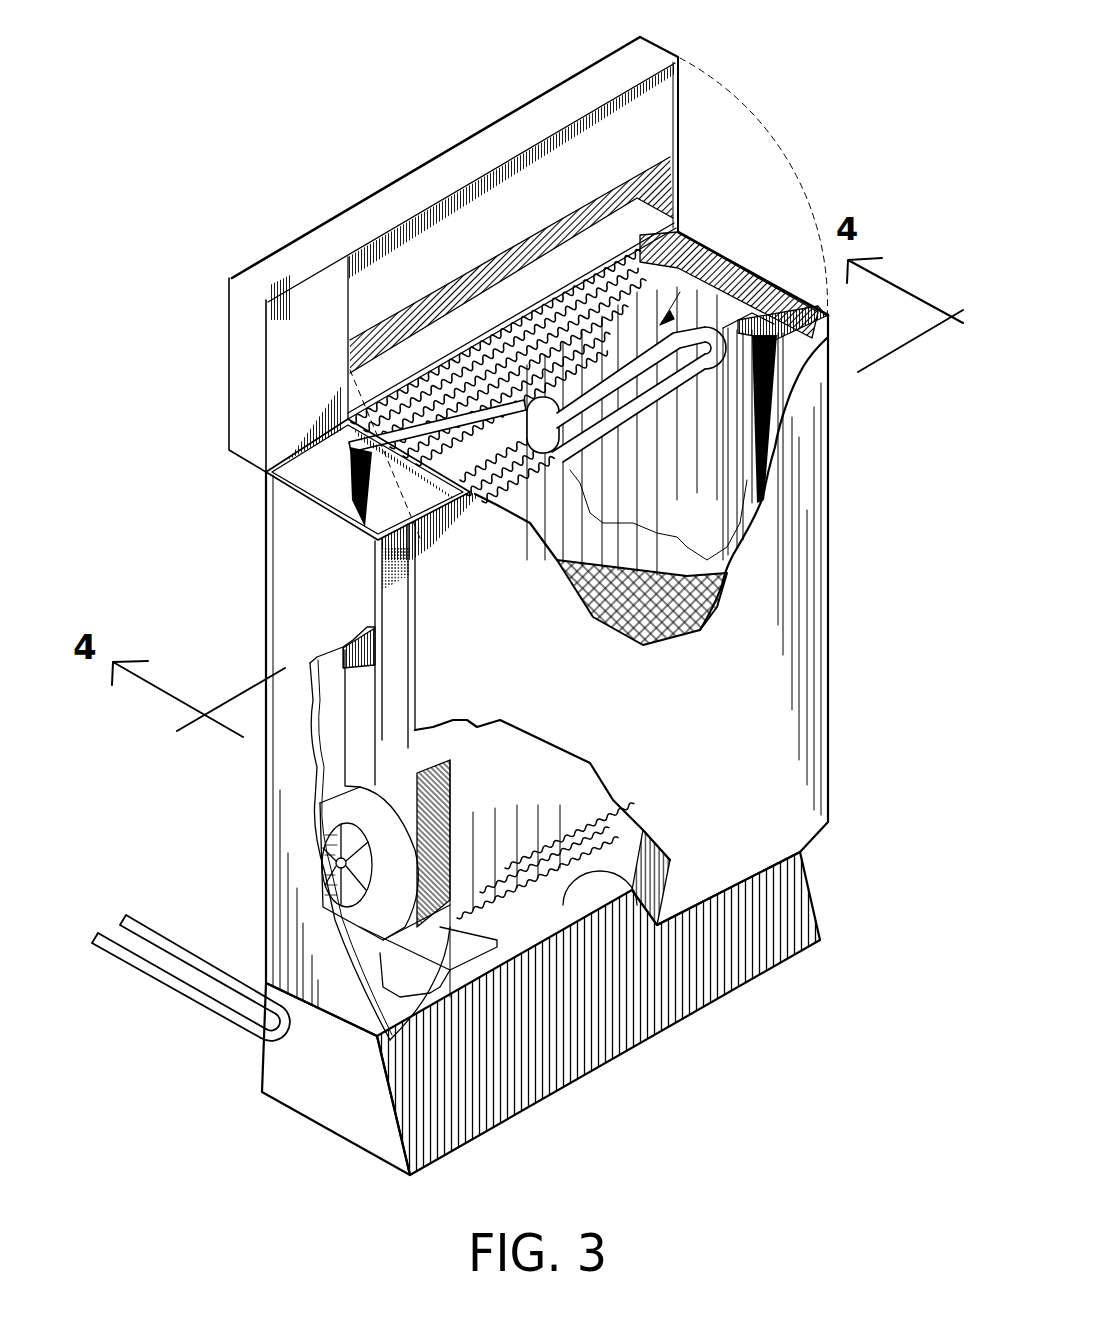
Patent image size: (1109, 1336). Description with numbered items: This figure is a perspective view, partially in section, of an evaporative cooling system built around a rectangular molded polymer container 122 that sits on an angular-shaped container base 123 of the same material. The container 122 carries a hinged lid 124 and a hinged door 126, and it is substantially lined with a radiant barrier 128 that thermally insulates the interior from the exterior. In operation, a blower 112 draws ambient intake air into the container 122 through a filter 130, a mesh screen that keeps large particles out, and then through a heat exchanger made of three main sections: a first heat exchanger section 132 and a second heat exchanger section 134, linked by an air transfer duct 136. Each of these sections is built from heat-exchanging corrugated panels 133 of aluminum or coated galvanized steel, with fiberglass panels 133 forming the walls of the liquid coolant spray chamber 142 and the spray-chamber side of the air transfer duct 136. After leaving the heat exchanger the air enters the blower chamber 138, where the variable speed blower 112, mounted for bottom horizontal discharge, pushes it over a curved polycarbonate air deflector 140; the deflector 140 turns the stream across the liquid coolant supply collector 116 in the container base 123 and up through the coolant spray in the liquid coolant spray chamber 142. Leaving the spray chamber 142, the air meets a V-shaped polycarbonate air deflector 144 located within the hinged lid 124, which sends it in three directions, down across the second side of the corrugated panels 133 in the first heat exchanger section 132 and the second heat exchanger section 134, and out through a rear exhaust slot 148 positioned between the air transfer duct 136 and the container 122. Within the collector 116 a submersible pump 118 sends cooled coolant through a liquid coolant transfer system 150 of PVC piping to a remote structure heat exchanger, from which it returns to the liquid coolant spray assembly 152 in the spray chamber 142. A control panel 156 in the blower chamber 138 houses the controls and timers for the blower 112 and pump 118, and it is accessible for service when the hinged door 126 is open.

The blower 112 is at (328, 910).
The liquid coolant supply collector 116 is at (533, 910).
The pump 118 is at (593, 905).
The container 122 is at (258, 618).
The container base 123 is at (810, 877).
The hinged lid 124 is at (393, 197).
The hinged door 126 is at (753, 713).
The radiant barrier 128 is at (710, 613).
The filter 130 is at (387, 578).
The first heat exchanger section 132 is at (652, 558).
The heat-exchanging corrugated panels 133 is at (552, 330).
The second heat exchanger section 134 is at (708, 330).
The air transfer duct 136 is at (800, 367).
The blower chamber 138 is at (335, 750).
The air deflector 140 is at (502, 950).
The liquid coolant spray chamber 142 is at (633, 462).
The air deflector 144 is at (648, 130).
The rear exhaust slot 148 is at (772, 325).
The liquid coolant transfer system 150 is at (440, 438).
The liquid coolant spray assembly 152 is at (740, 263).
The control panel 156 is at (360, 688).